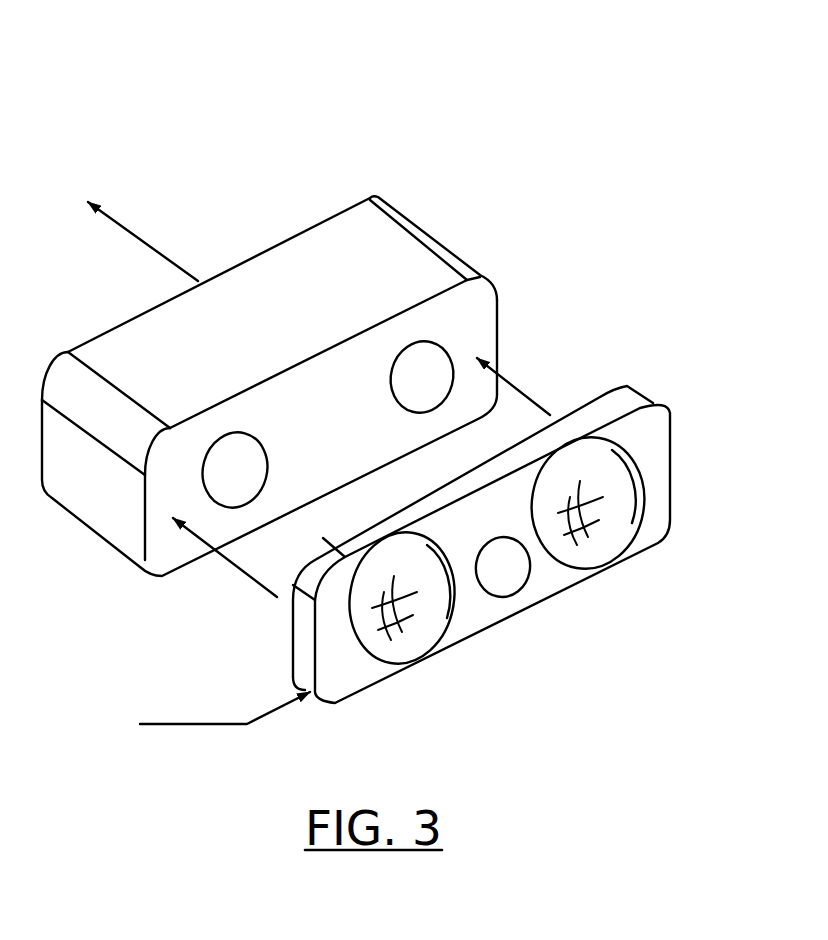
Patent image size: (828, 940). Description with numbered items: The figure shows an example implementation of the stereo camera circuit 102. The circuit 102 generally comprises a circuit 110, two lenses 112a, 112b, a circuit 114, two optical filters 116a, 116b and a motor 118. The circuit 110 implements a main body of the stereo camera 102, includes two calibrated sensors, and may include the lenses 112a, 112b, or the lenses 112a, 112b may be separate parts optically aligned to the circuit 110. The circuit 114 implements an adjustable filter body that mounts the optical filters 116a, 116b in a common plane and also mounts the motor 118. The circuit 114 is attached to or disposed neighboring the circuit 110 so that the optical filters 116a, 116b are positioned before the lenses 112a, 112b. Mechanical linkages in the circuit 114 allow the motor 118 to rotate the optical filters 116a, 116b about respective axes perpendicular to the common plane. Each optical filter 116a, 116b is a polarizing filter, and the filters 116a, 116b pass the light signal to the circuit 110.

The circuit 102 is at (258, 50).
The circuit 110 is at (100, 333).
The lens 112a is at (238, 433).
The lens 112b is at (417, 338).
The circuit 114 is at (293, 620).
The optical filter 116a is at (413, 647).
The optical filter 116b is at (612, 543).
The motor 118 is at (500, 598).